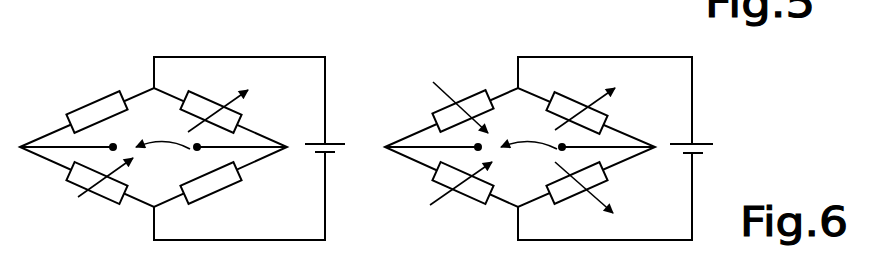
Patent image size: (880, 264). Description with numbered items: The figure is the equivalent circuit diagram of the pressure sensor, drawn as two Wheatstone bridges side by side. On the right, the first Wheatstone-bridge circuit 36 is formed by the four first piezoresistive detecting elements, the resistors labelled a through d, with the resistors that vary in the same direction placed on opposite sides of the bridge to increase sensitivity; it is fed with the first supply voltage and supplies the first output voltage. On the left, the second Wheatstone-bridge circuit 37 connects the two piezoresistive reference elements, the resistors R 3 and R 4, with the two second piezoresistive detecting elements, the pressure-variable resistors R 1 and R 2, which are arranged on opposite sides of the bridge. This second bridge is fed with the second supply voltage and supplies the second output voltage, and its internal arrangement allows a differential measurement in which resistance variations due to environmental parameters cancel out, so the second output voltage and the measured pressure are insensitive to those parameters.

The second Wheatstone-bridge circuit 37 is at (234, 46).
The first Wheatstone-bridge circuit 36 is at (558, 49).
The resistor R1 (variable) 1 is at (99, 191).
The resistor R2 (variable) 2 is at (214, 102).
The resistor R3 3 is at (96, 101).
The resistor R4 4 is at (210, 193).